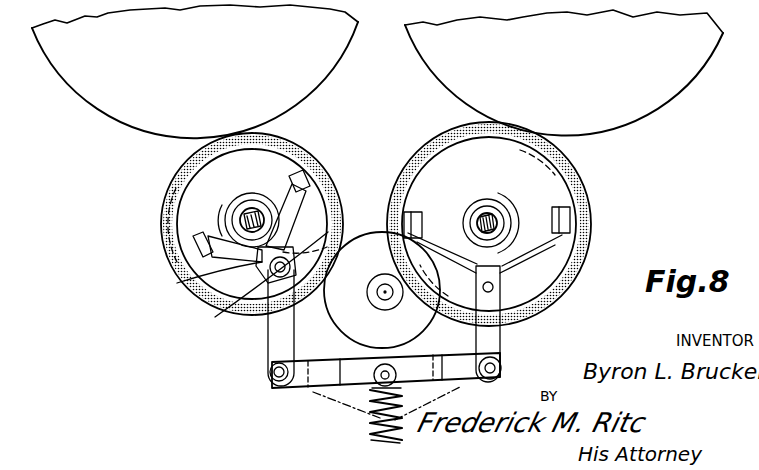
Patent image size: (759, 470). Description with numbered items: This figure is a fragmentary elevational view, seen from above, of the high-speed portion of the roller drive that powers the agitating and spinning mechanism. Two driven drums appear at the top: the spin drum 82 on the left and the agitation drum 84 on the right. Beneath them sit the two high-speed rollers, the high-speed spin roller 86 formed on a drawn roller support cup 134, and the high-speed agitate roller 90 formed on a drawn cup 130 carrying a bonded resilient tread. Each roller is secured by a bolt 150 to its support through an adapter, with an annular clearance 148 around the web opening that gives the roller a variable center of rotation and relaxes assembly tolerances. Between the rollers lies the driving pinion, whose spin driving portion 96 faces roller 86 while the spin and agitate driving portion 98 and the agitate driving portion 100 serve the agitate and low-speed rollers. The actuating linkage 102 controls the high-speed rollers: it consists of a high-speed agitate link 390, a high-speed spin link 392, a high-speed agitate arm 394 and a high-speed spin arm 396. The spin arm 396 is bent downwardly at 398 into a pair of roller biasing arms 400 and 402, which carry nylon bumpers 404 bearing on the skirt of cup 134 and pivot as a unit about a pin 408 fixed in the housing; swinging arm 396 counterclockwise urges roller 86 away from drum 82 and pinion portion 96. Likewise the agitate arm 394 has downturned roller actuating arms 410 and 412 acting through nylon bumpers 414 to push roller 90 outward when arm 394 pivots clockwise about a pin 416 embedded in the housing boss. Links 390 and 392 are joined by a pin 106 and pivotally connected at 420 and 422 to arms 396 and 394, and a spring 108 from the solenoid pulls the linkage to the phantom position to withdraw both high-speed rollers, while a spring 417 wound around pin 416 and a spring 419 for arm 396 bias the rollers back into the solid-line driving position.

The spin drum 82 is at (88, 104).
The agitation drum 84 is at (690, 82).
The high-speed spin roller 86 is at (160, 230).
The high-speed agitate roller 90 is at (580, 183).
The spin driving portion 96 is at (363, 232).
The spin and agitate driving portion 98 is at (376, 292).
The agitate driving portion 100 is at (383, 298).
The high-speed selection linkage 102 is at (503, 368).
The pin 106 is at (377, 387).
The spring 108 is at (404, 418).
The drawn cup 130 is at (430, 167).
The roller support cup 134 is at (196, 200).
The clearance 148 is at (503, 232).
The bolt 150 is at (495, 220).
The high-speed agitate link 390 is at (452, 375).
The high-speed spin link 392 is at (313, 373).
The high-speed agitate arm 394 is at (502, 330).
The high-speed spin arm 396 is at (280, 325).
The bent portion 398 is at (250, 283).
The roller biasing arm 400 is at (210, 250).
The roller biasing arm 402 is at (312, 197).
The nylon bumper 404 is at (308, 190).
The pin 408 is at (273, 277).
The roller actuating arm 410 is at (437, 230).
The roller actuating arm 412 is at (543, 250).
The nylon bumper 414 is at (408, 216).
The pin 416 is at (498, 288).
The spring 417 is at (550, 308).
The spring 419 is at (326, 252).
The pivotal connection 420 is at (276, 374).
The pivotal connection 422 is at (490, 374).